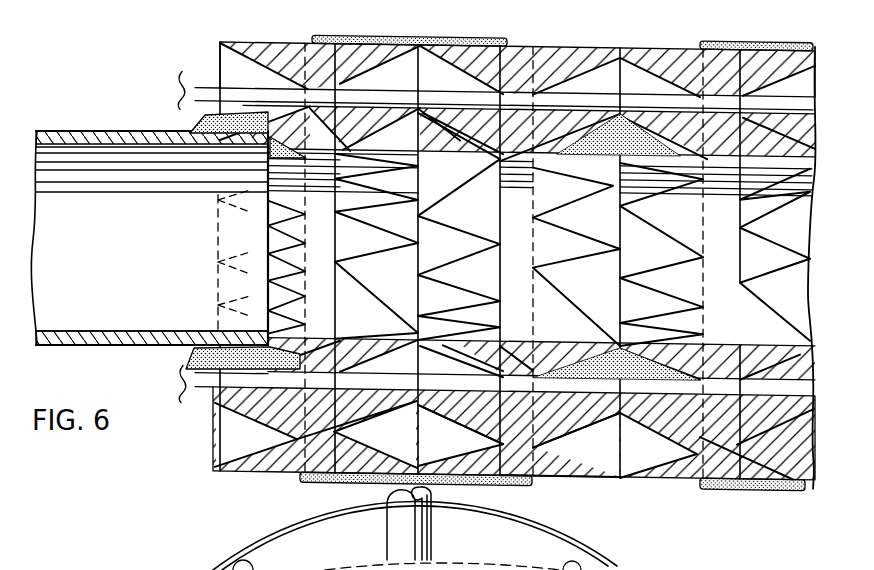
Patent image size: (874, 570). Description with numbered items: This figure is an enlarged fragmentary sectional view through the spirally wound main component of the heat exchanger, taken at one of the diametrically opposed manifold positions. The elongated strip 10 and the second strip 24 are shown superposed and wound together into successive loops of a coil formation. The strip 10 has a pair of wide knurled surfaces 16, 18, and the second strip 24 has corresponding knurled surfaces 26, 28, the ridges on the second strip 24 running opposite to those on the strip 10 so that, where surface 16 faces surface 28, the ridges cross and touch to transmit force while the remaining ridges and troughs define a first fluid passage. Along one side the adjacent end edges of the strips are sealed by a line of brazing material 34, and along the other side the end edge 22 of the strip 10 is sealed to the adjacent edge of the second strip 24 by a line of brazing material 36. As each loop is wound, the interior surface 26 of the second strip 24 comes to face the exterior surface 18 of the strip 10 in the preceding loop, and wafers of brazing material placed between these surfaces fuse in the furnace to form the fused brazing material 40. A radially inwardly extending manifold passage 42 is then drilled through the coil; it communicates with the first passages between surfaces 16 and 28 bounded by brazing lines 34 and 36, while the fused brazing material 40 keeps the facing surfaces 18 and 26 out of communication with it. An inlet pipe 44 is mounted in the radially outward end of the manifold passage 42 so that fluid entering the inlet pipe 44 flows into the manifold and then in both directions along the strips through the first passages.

The elongated strip 10 is at (204, 478).
The surface 16 is at (372, 480).
The surface 18 is at (230, 410).
The end edge 22 is at (752, 493).
The second strip 24 is at (568, 486).
The surface 26 is at (575, 457).
The surface 28 is at (478, 450).
The line of brazing material 34 is at (308, 480).
The line of brazing material 36 is at (265, 43).
The fused brazing material 40 is at (610, 118).
The manifold passage 42 is at (255, 310).
The inlet pipe 44 is at (128, 128).